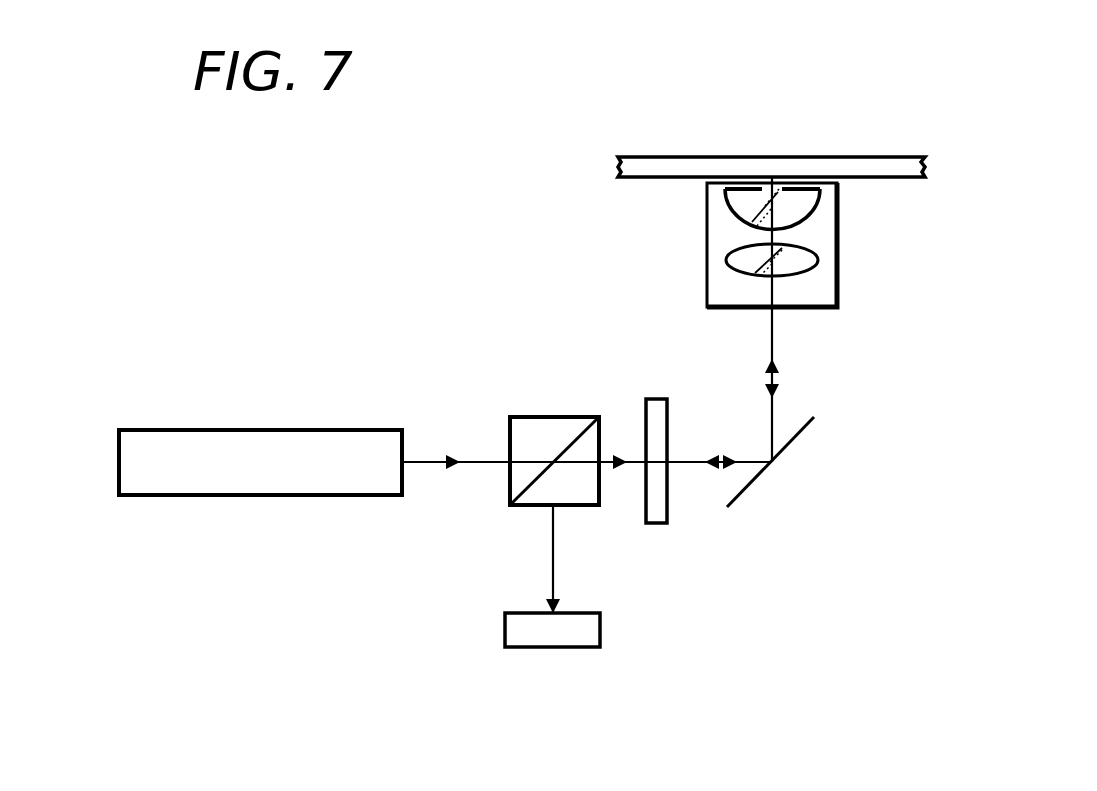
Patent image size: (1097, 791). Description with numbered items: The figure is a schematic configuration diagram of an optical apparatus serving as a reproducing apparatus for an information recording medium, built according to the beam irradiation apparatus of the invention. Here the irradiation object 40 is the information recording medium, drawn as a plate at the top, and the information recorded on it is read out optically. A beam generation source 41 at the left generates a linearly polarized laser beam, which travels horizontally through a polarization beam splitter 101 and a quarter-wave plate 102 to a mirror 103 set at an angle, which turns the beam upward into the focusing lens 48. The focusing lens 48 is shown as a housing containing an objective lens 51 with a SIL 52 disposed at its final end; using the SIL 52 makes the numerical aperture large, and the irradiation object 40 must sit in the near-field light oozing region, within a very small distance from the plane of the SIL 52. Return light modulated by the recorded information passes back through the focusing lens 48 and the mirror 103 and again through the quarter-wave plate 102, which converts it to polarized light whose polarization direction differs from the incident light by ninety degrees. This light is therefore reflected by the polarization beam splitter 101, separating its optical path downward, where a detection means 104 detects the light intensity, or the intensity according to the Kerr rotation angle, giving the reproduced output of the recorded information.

The irradiation object 40 is at (641, 157).
The focusing lens 48 is at (838, 290).
The SIL 52 is at (797, 208).
The objective lens 51 is at (743, 258).
The beam generation source 41 is at (212, 430).
The polarization beam splitter 101 is at (538, 417).
The quarter-wave plate 102 is at (657, 523).
The mirror 103 is at (800, 433).
The detection means 104 is at (563, 647).